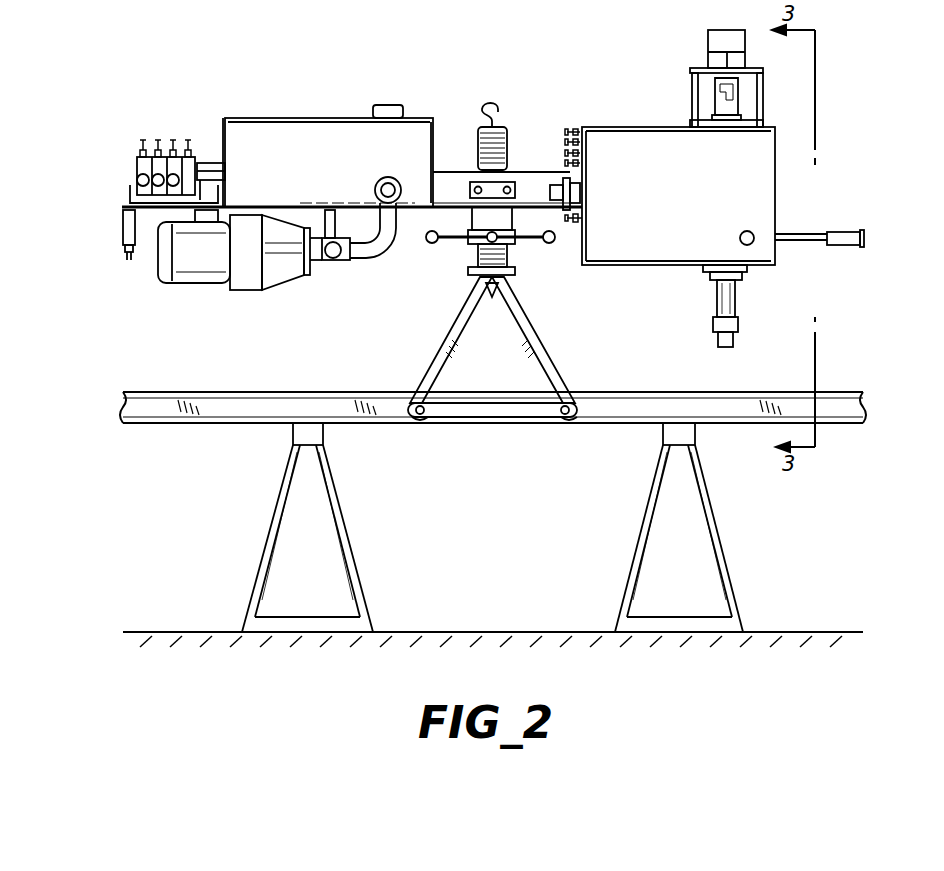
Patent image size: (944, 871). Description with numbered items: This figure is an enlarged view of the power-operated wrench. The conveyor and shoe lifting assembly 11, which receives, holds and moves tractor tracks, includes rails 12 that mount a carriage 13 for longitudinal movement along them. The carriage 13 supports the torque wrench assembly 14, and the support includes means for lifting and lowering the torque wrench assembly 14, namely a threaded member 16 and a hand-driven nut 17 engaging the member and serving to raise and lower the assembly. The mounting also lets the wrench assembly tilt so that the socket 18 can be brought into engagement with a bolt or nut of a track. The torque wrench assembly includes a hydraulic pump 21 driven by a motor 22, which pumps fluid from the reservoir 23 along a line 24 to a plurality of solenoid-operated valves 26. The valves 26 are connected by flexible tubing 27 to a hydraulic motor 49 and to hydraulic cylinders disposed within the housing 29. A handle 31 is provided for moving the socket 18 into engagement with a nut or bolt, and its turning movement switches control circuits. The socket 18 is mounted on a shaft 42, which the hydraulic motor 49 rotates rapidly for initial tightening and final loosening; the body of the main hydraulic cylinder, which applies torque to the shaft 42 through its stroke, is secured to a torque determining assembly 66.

The conveyor and shoe lifting assembly 11 is at (497, 437).
The rails 12 is at (392, 413).
The carriage 13 is at (552, 415).
The torque wrench assembly 14 is at (412, 74).
The threaded member 16 is at (480, 127).
The hand-driven nut 17 is at (485, 222).
The socket 18 is at (738, 323).
The hydraulic pump 21 is at (248, 258).
The motor 22 is at (204, 264).
The reservoir 23 is at (296, 150).
The line 24 is at (213, 160).
The solenoid-operated valves 26 is at (163, 145).
The flexible tubing 27 is at (577, 128).
The housing 29 is at (638, 125).
The handle 31 is at (832, 232).
The shaft 42 is at (717, 300).
The hydraulic motor 49 is at (715, 43).
The torque determining assembly 66 is at (562, 214).